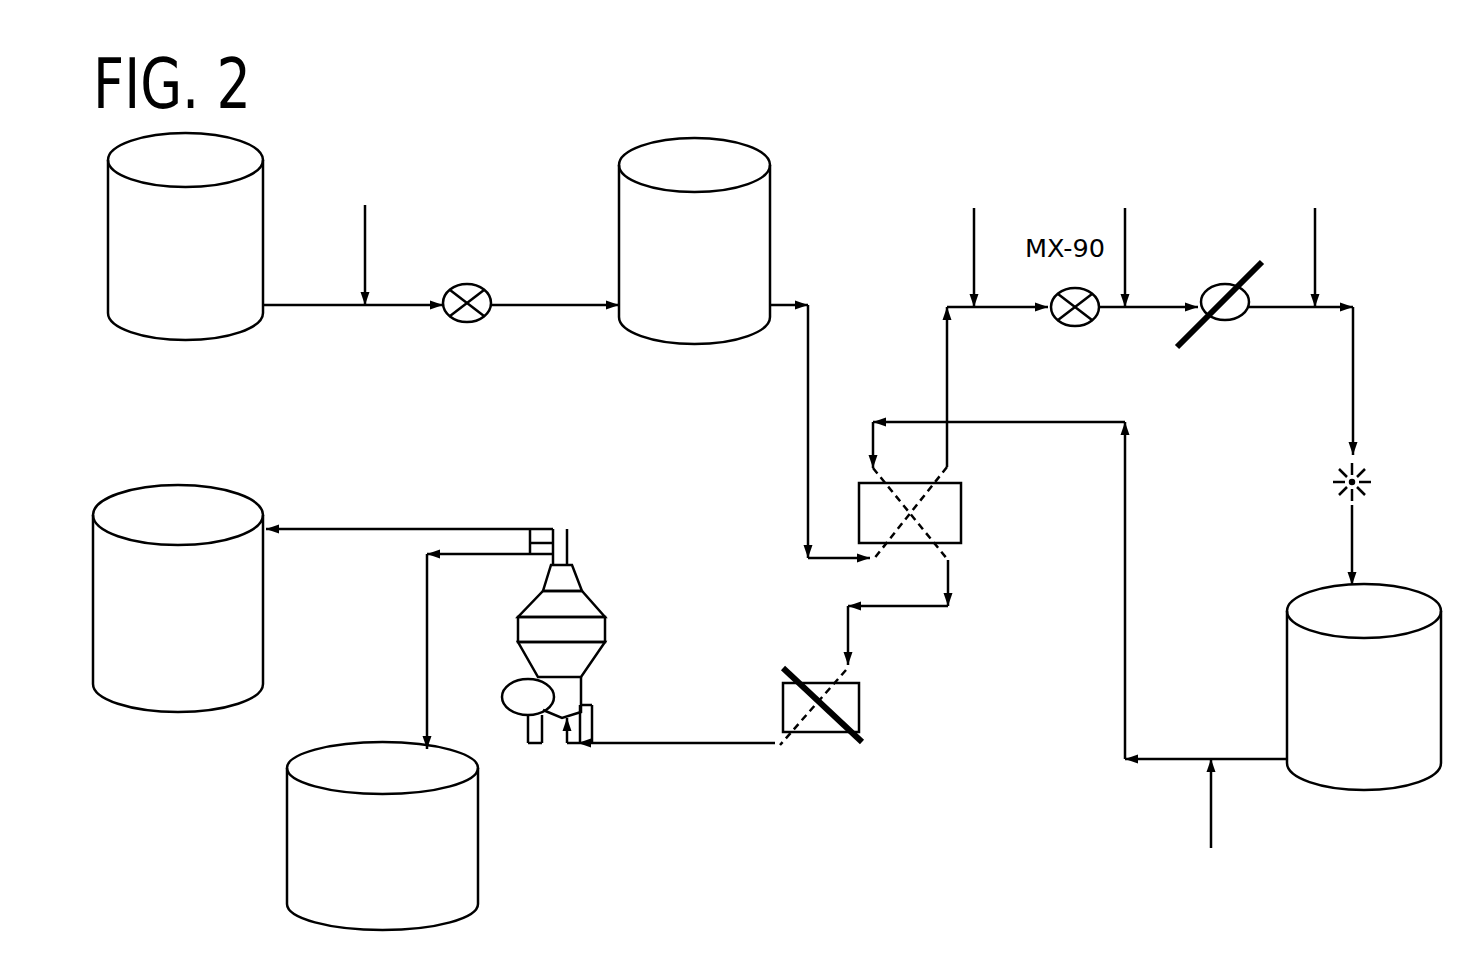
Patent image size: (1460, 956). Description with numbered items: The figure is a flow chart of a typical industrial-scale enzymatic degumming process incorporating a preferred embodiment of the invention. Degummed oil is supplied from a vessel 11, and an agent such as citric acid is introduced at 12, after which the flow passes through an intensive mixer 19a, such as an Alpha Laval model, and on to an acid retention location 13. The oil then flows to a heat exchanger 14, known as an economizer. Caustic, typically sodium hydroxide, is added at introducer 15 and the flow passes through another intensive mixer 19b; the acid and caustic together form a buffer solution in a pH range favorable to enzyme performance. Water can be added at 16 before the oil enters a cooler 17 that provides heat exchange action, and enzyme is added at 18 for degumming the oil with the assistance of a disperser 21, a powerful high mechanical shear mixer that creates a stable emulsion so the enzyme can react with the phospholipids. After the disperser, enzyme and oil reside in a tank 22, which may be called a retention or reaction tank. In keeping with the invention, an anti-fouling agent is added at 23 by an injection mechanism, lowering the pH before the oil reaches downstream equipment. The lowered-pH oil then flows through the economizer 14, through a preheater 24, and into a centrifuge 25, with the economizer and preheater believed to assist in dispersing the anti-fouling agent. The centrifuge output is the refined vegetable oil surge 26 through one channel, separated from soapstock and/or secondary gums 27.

The vessel 11 is at (220, 326).
The acid introduction point 12 is at (368, 310).
The acid retention location 13 is at (703, 333).
The heat exchanger 14 is at (952, 498).
The caustic introducer 15 is at (976, 312).
The water addition point 16 is at (1130, 302).
The cooler 17 is at (1215, 290).
The enzyme addition point 18 is at (1328, 300).
The intensive mixer 19a is at (480, 318).
The intensive mixer 19b is at (1075, 326).
The disperser 21 is at (1330, 482).
The tank 22 is at (1300, 663).
The anti-fouling agent addition point 23 is at (1219, 763).
The preheater 24 is at (860, 712).
The centrifuge 25 is at (606, 632).
The refined vegetable oil surge 26 is at (257, 641).
The soapstock and/or secondary gums 27 is at (479, 850).